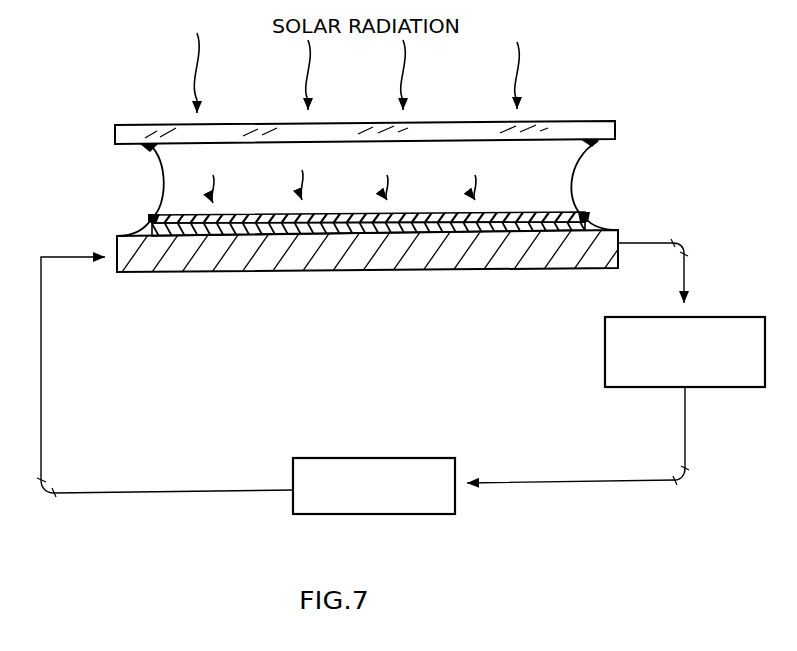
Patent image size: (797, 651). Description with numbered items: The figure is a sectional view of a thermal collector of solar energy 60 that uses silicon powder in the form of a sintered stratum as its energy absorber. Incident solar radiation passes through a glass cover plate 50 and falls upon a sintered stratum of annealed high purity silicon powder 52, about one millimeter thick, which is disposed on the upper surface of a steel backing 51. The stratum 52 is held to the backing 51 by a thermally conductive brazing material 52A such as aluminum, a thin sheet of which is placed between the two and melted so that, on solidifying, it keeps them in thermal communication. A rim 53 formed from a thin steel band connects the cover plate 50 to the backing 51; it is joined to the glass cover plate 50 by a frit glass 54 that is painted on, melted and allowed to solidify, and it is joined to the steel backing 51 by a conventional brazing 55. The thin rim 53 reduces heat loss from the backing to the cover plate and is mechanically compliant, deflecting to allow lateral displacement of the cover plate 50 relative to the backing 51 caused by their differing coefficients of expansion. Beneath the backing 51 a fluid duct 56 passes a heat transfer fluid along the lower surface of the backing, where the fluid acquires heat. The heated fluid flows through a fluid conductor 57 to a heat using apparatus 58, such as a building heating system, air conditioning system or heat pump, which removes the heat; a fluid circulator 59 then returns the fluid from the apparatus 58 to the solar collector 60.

The glass cover plate 50 is at (563, 123).
The steel backing 51 is at (438, 212).
The sintered stratum of annealed high purity silicon powder 52 is at (263, 212).
The thermally conductive brazing material 52A is at (335, 218).
The rim 53 is at (161, 181).
The frit glass 54 is at (150, 149).
The brazing 55 is at (154, 222).
The fluid duct 56 is at (297, 272).
The fluid conductor 57 is at (680, 279).
The heat using apparatus 58 is at (731, 317).
The fluid circulator 59 is at (432, 458).
The thermal collector of solar energy 60 is at (186, 118).